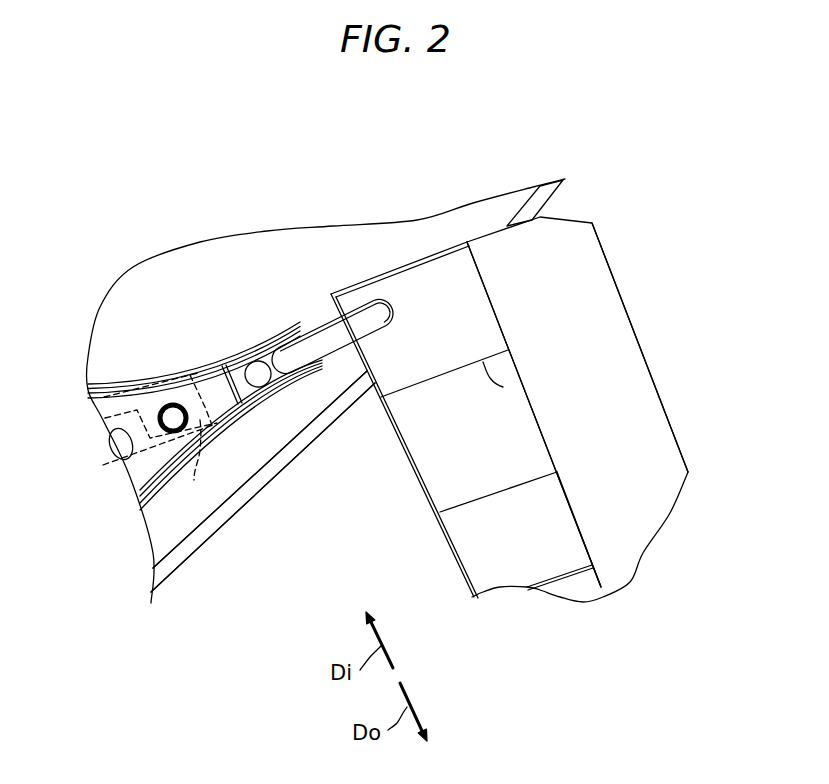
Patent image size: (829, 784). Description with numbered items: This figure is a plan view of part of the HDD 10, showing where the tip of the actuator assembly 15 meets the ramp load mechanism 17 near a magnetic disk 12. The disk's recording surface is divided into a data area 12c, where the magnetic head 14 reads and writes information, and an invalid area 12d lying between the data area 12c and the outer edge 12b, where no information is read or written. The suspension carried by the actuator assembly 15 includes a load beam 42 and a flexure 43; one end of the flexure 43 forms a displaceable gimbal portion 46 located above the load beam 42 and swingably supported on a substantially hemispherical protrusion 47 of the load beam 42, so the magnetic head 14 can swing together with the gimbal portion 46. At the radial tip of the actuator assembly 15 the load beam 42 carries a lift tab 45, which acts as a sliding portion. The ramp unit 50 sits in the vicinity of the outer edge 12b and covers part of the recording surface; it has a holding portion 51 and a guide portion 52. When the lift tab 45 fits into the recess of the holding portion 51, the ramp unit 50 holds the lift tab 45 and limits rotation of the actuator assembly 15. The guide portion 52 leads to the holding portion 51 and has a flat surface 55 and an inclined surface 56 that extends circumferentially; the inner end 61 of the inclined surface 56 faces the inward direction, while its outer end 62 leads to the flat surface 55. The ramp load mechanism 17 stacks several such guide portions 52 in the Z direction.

The HDD 10 is at (71, 143).
The magnetic disk 12 is at (400, 237).
The outer edge 12b is at (185, 568).
The data area 12c is at (305, 247).
The invalid area 12d is at (296, 425).
The magnetic head 14 is at (200, 420).
The actuator assembly 15 is at (117, 383).
The ramp load mechanism 17 is at (645, 358).
The load beam 42 is at (233, 357).
The flexure 43 is at (83, 382).
The lift tab 45 is at (320, 328).
The gimbal portion 46 is at (194, 480).
The protrusion 47 is at (170, 405).
The ramp unit 50 is at (640, 347).
The holding portion 51 is at (470, 572).
The guide portion 52 is at (510, 338).
The flat surface 55 is at (525, 440).
The inclined surface 56 is at (473, 278).
The inner end 61 is at (466, 240).
The outer end 62 is at (503, 387).